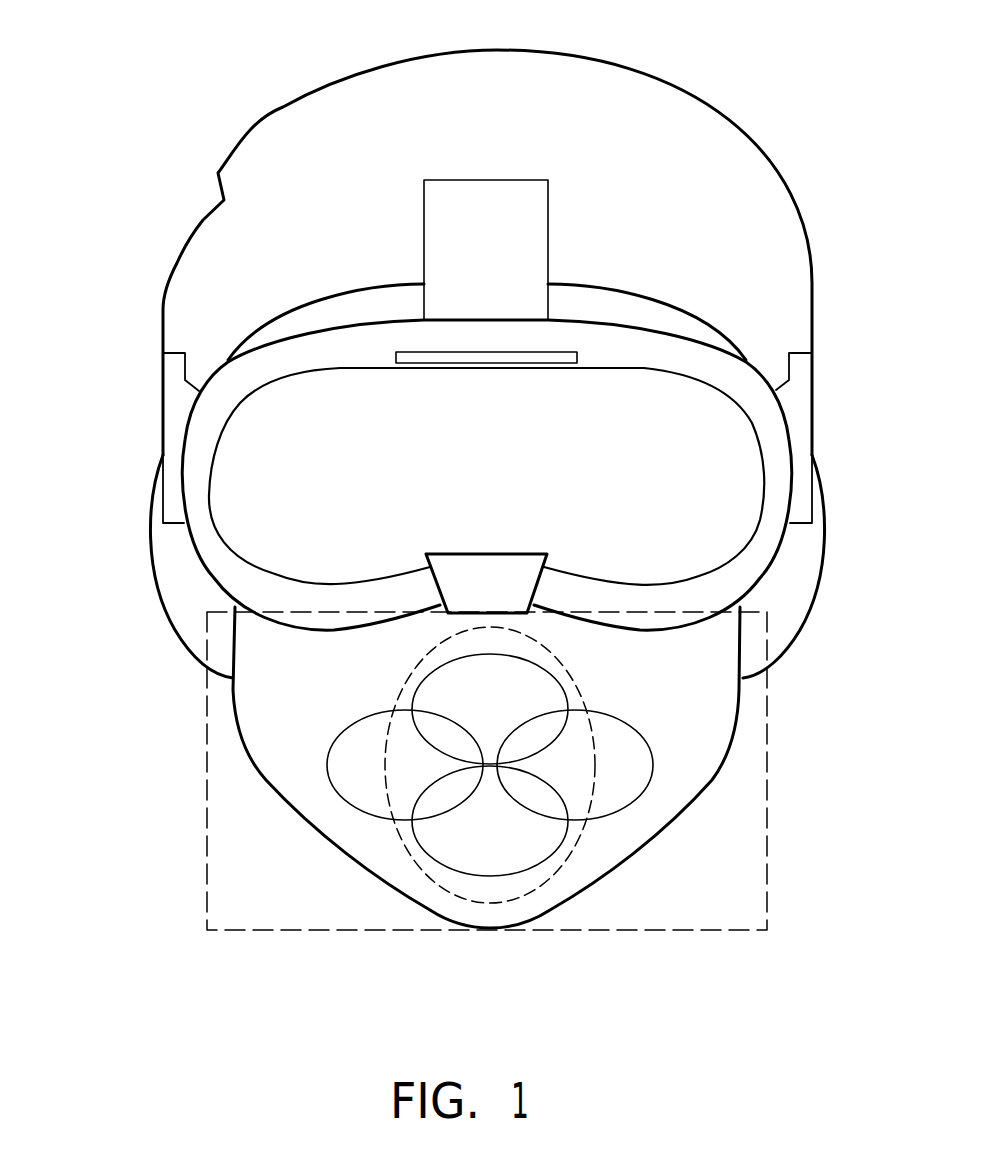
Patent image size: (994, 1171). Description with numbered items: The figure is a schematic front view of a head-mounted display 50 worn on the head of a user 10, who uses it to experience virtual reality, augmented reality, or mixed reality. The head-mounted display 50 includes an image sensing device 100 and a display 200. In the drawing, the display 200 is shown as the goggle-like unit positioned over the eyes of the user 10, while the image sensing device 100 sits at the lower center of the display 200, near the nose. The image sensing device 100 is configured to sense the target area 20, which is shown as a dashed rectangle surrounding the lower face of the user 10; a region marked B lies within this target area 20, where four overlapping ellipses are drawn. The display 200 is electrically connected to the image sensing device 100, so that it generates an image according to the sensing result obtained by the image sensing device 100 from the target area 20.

The user 10 is at (297, 110).
The head-mounted display 50 is at (710, 335).
The display 200 is at (235, 447).
The image sensing device 100 is at (510, 590).
The target area 20 is at (767, 812).
The breath B is at (627, 807).